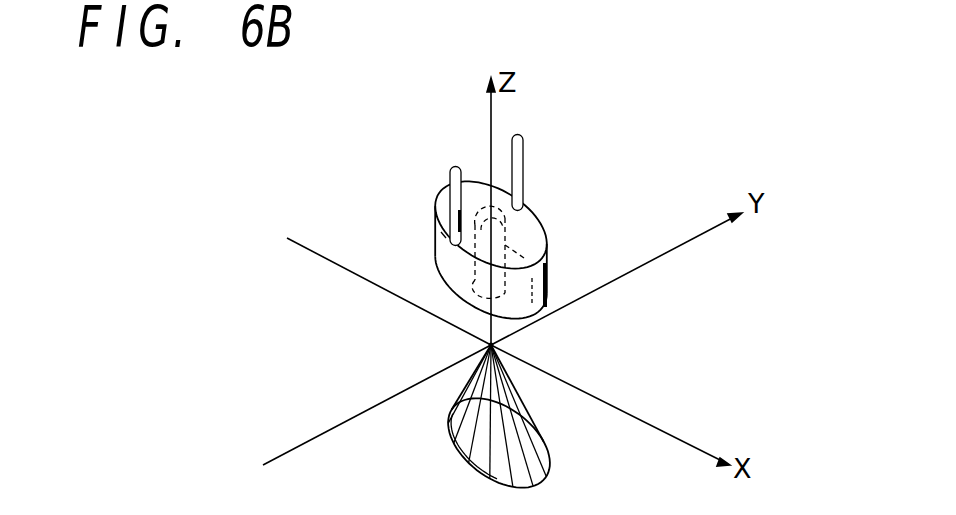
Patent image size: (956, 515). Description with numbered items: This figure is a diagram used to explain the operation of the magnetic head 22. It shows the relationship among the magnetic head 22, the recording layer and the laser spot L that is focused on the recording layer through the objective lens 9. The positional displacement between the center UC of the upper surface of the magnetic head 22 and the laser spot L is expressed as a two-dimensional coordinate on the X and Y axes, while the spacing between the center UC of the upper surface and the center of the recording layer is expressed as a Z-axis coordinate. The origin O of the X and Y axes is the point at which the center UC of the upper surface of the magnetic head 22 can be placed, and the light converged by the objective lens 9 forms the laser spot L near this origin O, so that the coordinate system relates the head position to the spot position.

The magnetic head 22 is at (548, 267).
The objective lens 9 is at (550, 467).
The origin O is at (480, 346).
The laser spot L is at (502, 355).